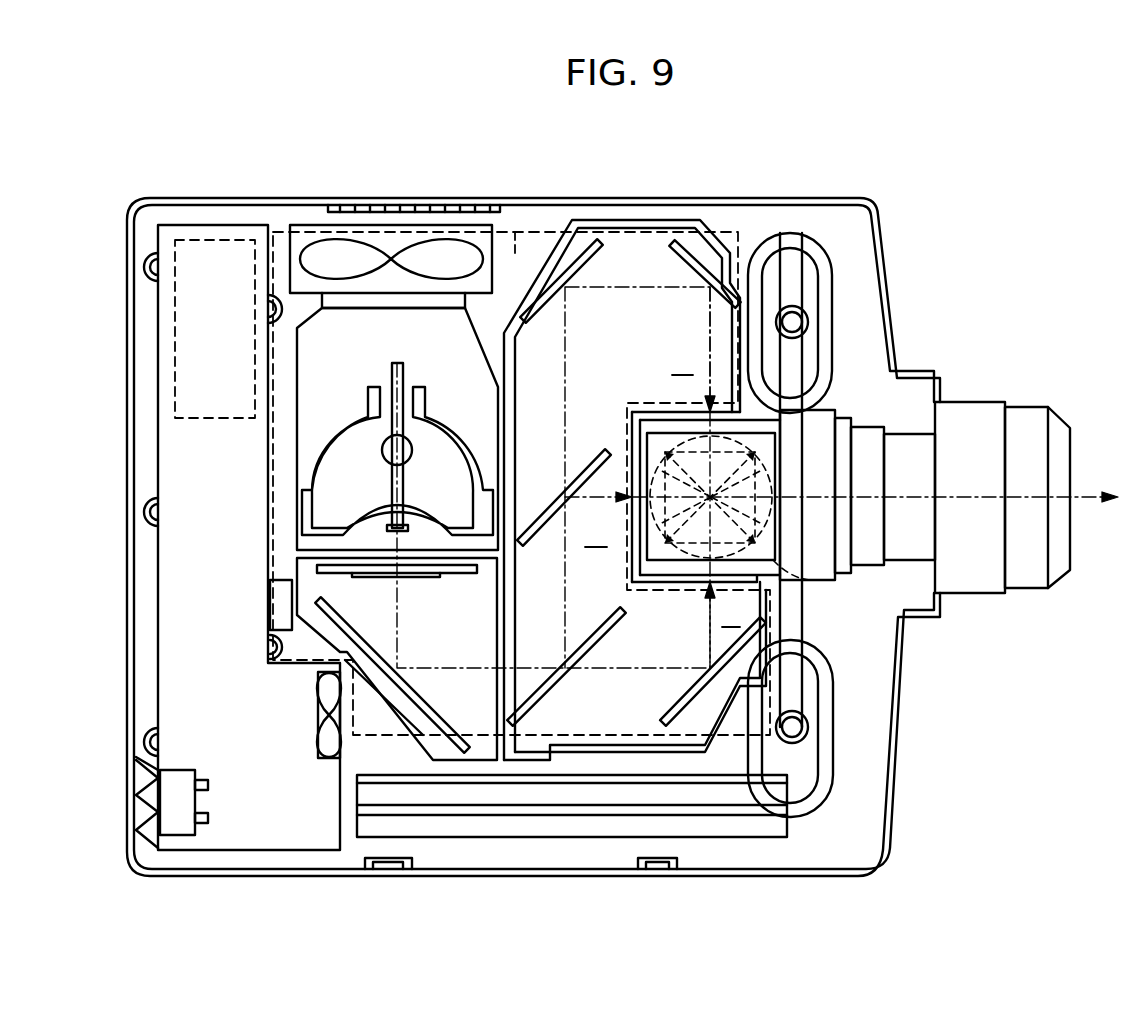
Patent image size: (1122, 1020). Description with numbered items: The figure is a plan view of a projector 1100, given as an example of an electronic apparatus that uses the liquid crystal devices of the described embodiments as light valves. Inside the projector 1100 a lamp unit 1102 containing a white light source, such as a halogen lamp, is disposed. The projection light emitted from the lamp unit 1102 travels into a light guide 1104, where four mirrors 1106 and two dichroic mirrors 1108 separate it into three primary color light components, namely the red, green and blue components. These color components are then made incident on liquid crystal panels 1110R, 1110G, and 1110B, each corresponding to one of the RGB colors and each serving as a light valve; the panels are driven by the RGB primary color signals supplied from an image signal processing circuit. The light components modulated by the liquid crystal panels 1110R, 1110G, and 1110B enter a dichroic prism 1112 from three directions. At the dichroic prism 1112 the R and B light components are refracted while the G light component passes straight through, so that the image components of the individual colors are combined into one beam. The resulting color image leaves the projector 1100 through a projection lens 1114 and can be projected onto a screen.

The projector 1100 is at (892, 203).
The lamp unit 1102 is at (448, 345).
The light guide 1104 is at (575, 228).
The mirror 1106 is at (687, 258).
The dichroic mirror 1108 is at (578, 530).
The liquid crystal panel 1110R is at (673, 408).
The liquid crystal panel 1110G is at (632, 465).
The liquid crystal panel 1110B is at (668, 585).
The dichroic prism 1112 is at (818, 578).
The projection lens 1114 is at (1037, 410).